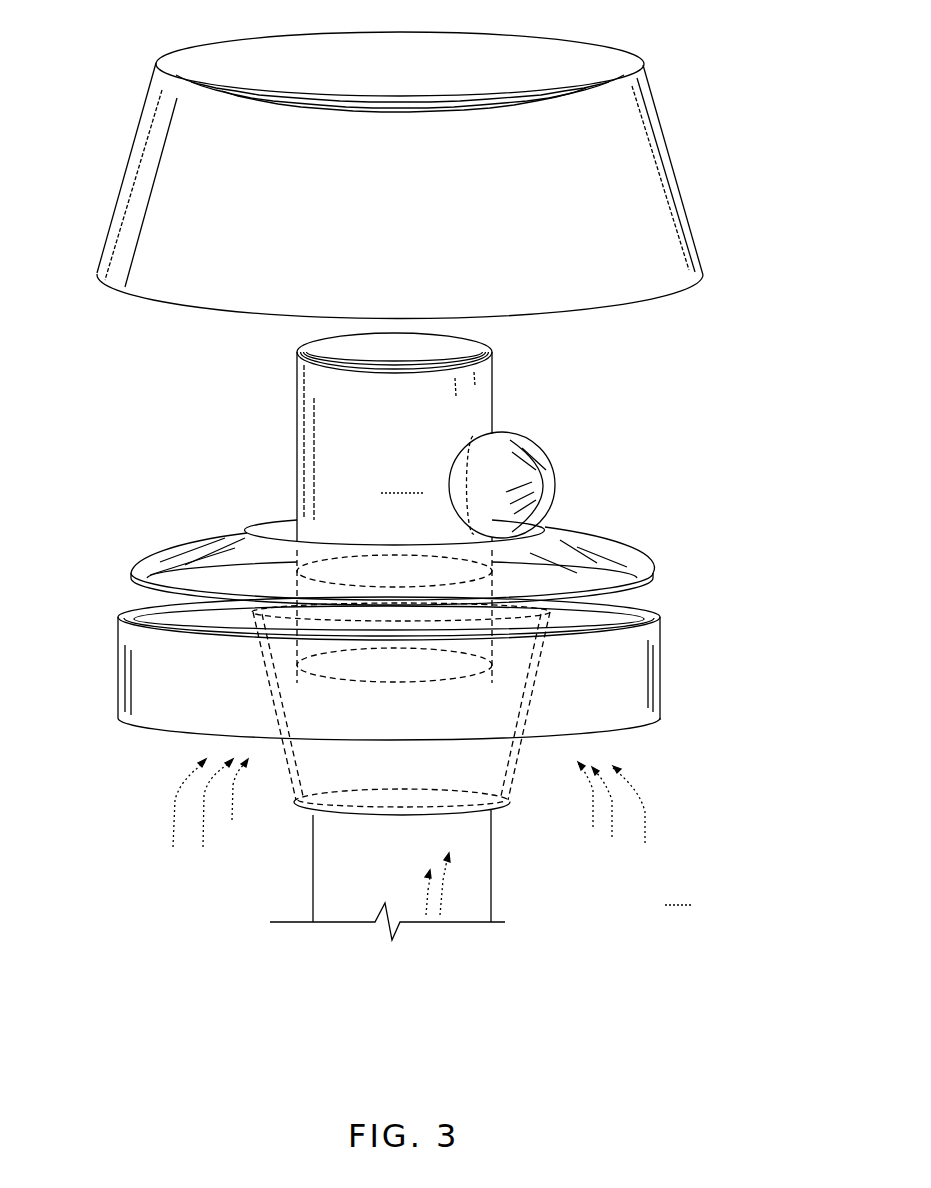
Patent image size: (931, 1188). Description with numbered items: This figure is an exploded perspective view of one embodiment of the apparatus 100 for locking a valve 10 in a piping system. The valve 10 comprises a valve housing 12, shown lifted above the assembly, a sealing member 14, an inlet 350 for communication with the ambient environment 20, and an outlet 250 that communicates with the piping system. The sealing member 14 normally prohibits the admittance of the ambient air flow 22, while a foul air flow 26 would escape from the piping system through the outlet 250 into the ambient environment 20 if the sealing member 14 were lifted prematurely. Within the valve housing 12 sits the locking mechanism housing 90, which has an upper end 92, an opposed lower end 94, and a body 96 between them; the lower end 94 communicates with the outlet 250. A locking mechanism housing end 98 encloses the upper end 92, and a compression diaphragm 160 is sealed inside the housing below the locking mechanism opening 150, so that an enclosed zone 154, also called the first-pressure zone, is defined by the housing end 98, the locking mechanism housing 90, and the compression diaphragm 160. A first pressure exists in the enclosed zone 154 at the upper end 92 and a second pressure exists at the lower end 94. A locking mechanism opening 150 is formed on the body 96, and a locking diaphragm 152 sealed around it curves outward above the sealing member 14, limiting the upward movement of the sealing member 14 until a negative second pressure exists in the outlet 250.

The valve 10 is at (418, 179).
The valve housing 12 is at (605, 284).
The sealing member 14 is at (588, 543).
The ambient environment 20 is at (481, 909).
The ambient air flow 22 is at (172, 811).
The foul air flow 26 is at (442, 880).
The locking mechanism housing 90 is at (340, 506).
The upper end 92 is at (295, 360).
The lower end 94 is at (472, 670).
The body 96 is at (297, 482).
The locking mechanism housing end 98 is at (297, 350).
The apparatus 100 is at (407, 635).
The locking mechanism opening 150 is at (552, 474).
The locking diaphragm 152 is at (543, 471).
The enclosed zone 154 is at (402, 480).
The compression diaphragm 160 is at (150, 580).
The outlet 250 is at (473, 843).
The inlet 350 is at (630, 727).